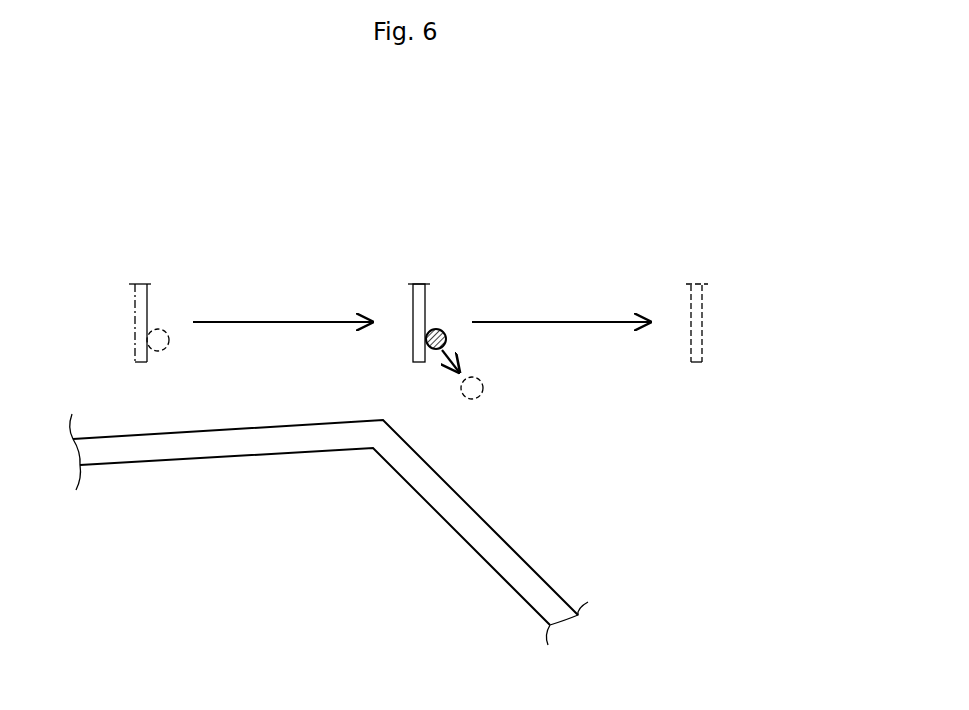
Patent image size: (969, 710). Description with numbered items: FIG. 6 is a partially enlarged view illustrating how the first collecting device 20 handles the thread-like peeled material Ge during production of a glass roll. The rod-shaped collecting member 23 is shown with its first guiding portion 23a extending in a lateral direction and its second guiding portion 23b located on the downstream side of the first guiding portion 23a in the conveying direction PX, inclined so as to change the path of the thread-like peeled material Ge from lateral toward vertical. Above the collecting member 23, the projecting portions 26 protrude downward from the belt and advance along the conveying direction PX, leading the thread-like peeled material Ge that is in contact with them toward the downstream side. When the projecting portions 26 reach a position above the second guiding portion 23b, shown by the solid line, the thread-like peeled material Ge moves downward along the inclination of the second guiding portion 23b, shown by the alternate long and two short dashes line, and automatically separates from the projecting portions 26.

The first collecting device 20 is at (535, 178).
The projecting portions 26 is at (147, 317).
The thread-like peeled material Ge is at (168, 345).
The collecting member 23 is at (329, 529).
The first guiding portion 23a is at (249, 447).
The second guiding portion 23b is at (485, 533).
The conveying direction of thread-like peeled material PX is at (222, 541).